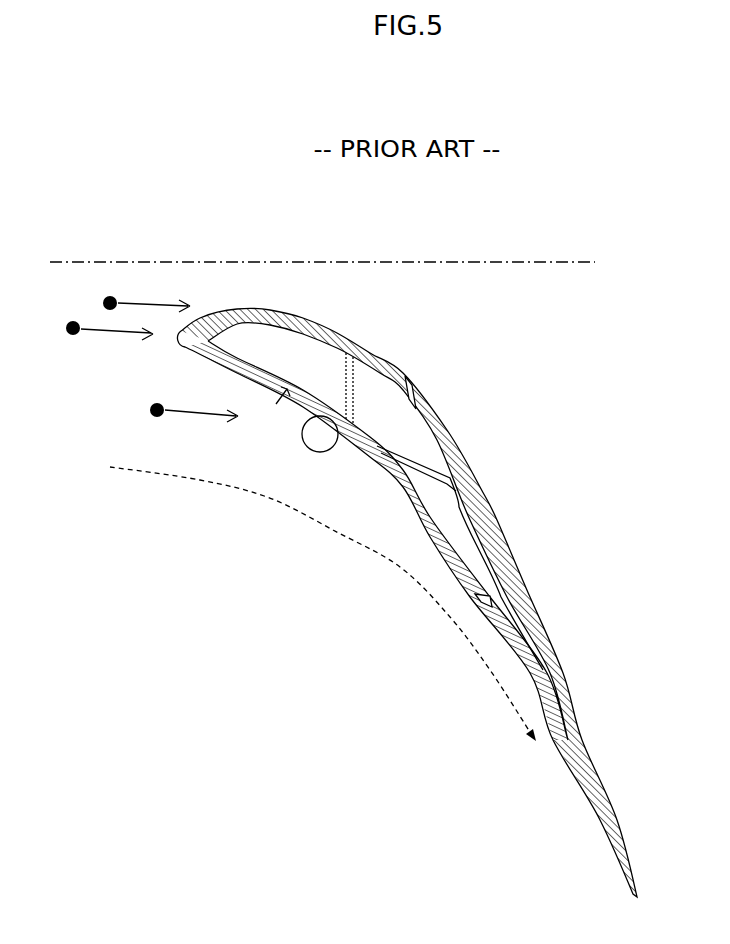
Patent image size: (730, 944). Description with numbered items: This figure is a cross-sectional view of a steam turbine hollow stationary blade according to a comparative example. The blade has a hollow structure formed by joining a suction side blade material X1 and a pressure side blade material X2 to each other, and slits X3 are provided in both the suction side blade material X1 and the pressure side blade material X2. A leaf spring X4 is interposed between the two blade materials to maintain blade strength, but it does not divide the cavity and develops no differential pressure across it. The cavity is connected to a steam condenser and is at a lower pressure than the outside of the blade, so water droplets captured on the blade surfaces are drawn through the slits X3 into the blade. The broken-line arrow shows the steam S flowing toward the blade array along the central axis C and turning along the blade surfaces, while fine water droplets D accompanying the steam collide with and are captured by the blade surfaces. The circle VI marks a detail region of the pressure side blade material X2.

The central axis C is at (315, 262).
The fine water droplets D is at (66, 328).
The steam S is at (315, 597).
The suction side blade material X1 is at (391, 365).
The pressure side blade material X2 is at (345, 452).
The slits X3 is at (423, 380).
The leaf spring X4 is at (354, 408).
The detail view circle VI is at (302, 436).